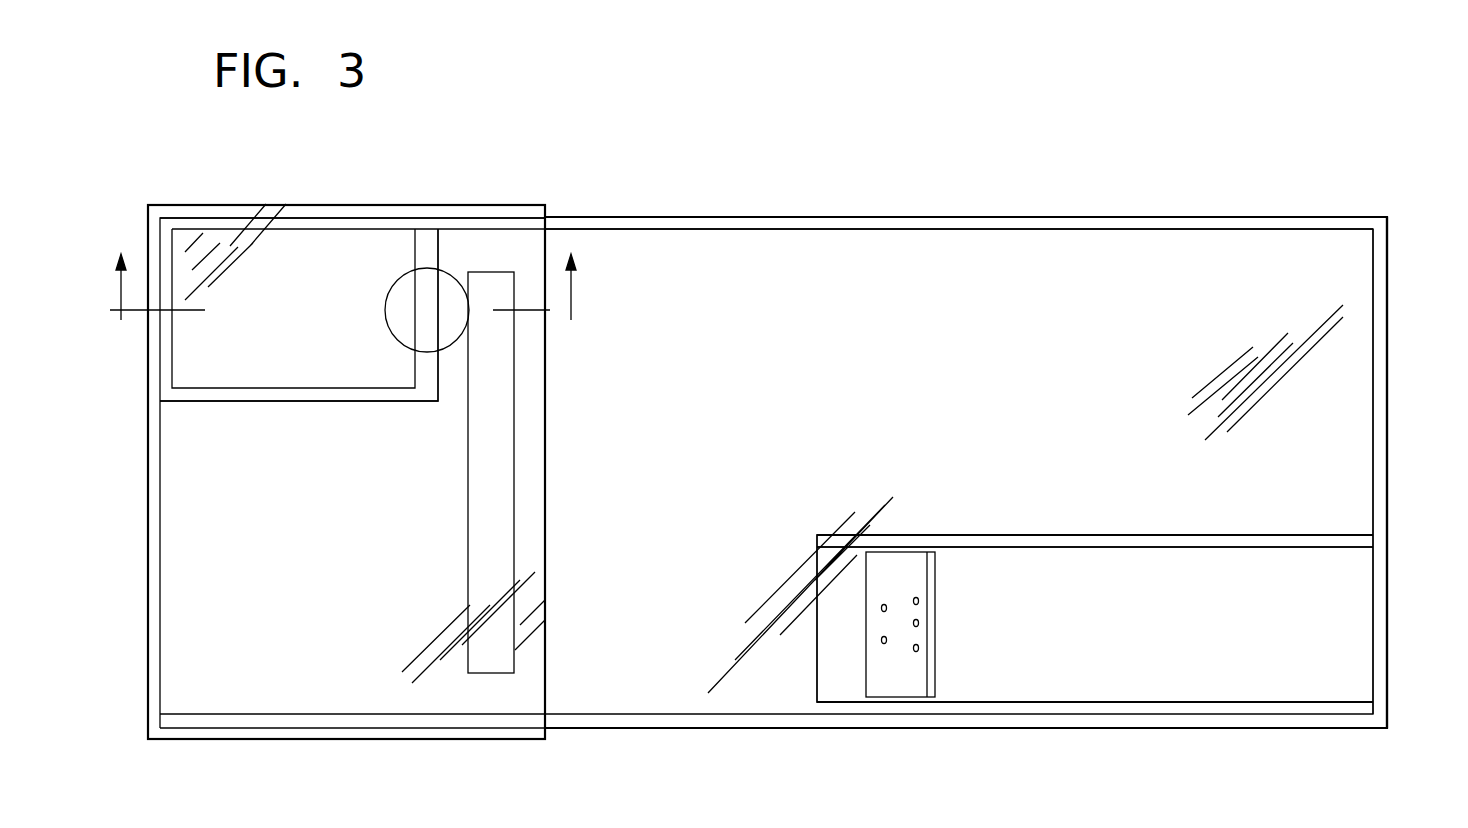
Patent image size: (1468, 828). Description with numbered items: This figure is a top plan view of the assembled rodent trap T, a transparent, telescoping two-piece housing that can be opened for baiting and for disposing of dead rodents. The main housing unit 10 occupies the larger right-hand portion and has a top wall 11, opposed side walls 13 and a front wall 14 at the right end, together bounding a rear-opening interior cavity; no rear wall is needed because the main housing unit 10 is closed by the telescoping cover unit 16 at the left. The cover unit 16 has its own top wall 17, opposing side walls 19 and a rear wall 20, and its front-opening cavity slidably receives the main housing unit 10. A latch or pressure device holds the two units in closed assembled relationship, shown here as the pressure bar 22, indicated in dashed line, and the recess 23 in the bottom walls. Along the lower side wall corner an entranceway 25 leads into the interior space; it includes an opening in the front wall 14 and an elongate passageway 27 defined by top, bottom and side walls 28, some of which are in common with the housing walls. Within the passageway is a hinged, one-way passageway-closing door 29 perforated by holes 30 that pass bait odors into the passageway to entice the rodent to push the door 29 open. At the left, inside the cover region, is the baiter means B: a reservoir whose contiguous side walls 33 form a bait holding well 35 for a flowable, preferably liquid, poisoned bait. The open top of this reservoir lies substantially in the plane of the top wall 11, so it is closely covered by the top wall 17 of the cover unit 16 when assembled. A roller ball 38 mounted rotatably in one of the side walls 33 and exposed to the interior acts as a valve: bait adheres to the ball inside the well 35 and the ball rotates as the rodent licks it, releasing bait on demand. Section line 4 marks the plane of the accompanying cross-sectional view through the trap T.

The section line 4- 4 is at (348, 300).
The main housing unit 10 is at (962, 212).
The top wall 11 is at (1153, 216).
The side walls 13 is at (613, 216).
The front wall 14 is at (1388, 437).
The telescoping cover unit 16 is at (456, 202).
The top wall 17 is at (360, 660).
The side walls 19 is at (318, 205).
The rear wall 20 is at (147, 512).
The pressure bar 22 is at (498, 513).
The recess 23 is at (503, 447).
The entranceway 25 is at (1343, 664).
The elongate passageway 27 is at (1335, 590).
The passageway walls 28 is at (1113, 533).
The one-way door 29 is at (917, 575).
The holes 30 is at (920, 623).
The reservoir side walls 33 is at (375, 397).
The bait well 35 is at (260, 362).
The roller ball valve 38 is at (385, 308).
The baiter means B is at (328, 418).
The rodent trap T is at (828, 175).